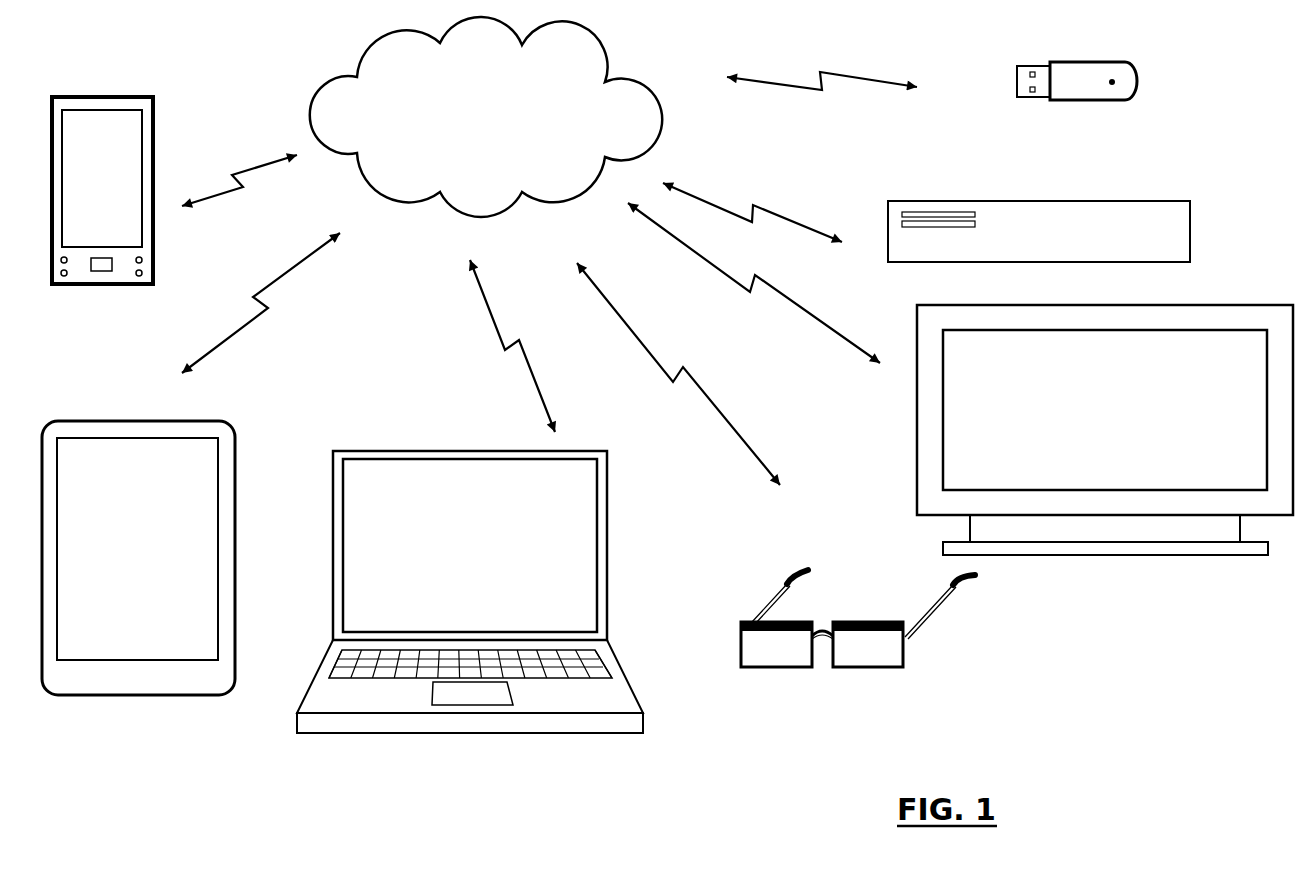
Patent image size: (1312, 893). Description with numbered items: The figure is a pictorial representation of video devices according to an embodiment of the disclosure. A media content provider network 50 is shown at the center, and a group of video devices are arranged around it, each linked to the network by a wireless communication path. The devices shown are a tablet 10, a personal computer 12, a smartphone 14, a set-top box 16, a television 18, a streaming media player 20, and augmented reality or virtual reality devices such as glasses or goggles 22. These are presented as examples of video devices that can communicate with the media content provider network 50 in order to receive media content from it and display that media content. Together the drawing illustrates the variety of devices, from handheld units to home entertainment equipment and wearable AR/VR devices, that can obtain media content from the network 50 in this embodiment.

The tablet 10 is at (114, 689).
The personal computer 12 is at (402, 499).
The smartphone 14 is at (103, 146).
The set-top box 16 is at (1078, 237).
The television 18 is at (988, 369).
The streaming media player 20 is at (1083, 92).
The augmented reality/virtual reality glasses or goggles 22 is at (783, 656).
The media content provider network 50 is at (486, 117).